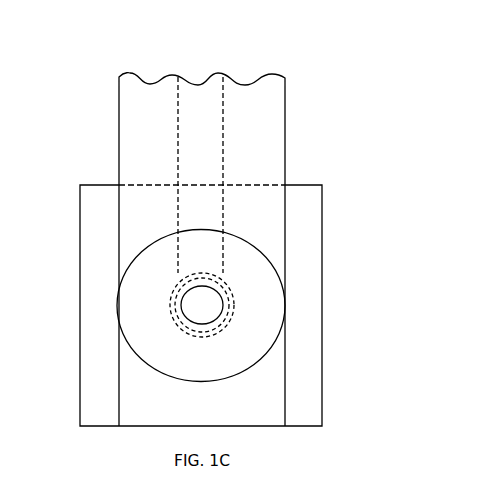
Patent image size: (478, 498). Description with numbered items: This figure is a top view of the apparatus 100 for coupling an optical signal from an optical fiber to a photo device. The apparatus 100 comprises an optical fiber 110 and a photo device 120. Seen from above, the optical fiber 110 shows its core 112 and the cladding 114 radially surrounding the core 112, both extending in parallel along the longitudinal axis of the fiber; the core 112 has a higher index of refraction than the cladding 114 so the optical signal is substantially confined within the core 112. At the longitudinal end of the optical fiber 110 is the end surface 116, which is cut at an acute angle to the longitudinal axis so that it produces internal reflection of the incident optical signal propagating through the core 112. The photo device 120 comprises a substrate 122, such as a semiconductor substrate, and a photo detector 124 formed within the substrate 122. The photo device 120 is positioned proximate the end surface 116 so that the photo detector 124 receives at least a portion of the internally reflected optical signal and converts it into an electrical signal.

The apparatus 100 is at (352, 88).
The optical fiber 110 is at (118, 160).
The core 112 is at (208, 305).
The cladding 114 is at (142, 313).
The end surface 116 is at (213, 365).
The photo device 120 is at (312, 183).
The substrate 122 is at (305, 362).
The photo detector 124 is at (183, 330).